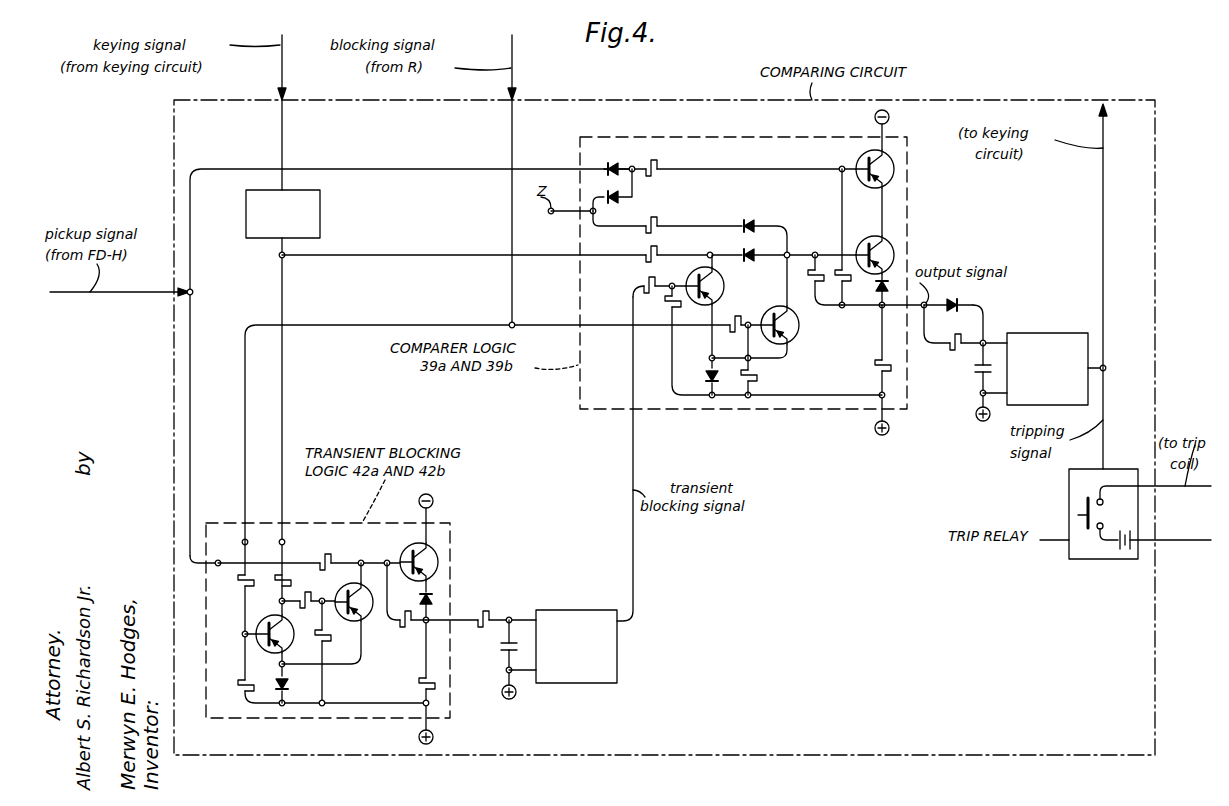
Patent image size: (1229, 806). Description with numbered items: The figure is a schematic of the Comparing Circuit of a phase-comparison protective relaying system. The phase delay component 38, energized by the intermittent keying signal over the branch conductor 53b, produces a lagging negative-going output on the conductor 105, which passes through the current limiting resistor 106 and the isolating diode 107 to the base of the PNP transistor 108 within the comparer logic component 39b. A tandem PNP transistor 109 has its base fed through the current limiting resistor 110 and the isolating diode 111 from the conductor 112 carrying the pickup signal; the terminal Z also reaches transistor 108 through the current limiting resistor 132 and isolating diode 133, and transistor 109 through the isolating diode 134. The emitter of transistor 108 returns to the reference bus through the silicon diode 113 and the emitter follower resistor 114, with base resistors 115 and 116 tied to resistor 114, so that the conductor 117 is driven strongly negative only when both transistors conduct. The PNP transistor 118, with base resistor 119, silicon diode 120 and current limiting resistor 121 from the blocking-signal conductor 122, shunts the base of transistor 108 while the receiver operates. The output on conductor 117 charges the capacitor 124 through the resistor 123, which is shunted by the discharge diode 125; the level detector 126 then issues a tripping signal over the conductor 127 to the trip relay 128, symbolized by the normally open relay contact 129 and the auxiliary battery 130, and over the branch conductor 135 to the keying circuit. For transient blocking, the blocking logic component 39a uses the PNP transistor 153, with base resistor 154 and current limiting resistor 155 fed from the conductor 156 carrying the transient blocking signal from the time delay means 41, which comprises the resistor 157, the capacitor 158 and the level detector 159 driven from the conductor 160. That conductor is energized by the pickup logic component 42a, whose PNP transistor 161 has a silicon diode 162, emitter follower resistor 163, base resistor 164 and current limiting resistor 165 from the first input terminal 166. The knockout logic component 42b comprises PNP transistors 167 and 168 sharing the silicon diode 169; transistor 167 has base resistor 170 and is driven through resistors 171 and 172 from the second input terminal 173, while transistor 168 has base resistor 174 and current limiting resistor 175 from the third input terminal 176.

The branch conductor 53b is at (283, 132).
The phase delay component 38 is at (320, 209).
The conductor 105 is at (280, 255).
The conductor 112 is at (192, 295).
The conductor 122 is at (511, 228).
The isolating diode 111 is at (612, 162).
The current limiting resistor 110 is at (652, 162).
The isolating diode 134 is at (616, 203).
The current limiting resistor 132 is at (654, 221).
The isolating diode 133 is at (748, 219).
The current limiting resistor 106 is at (654, 249).
The isolating diode 107 is at (748, 250).
The PNP transistor 109 is at (856, 155).
The PNP transistor 108 is at (866, 236).
The base resistor 116 is at (838, 268).
The base resistor 115 is at (812, 290).
The silicon diode 113 is at (876, 285).
The conductor 117 is at (900, 306).
The emitter follower resistor 114 is at (875, 378).
The current limiting resistor 155 is at (648, 278).
The conductor 156 is at (634, 570).
The PNP transistor 153 is at (717, 282).
The base resistor 154 is at (668, 310).
The current limiting resistor 121 is at (727, 322).
The PNP transistor 118 is at (793, 335).
The silicon diode 120 is at (705, 378).
The base resistor 119 is at (756, 375).
The diode 125 is at (958, 302).
The resistor 123 is at (952, 350).
The capacitor 124 is at (978, 372).
The level detector 126 is at (1058, 333).
The conductor 127 is at (1104, 394).
The conductor 135 is at (1104, 182).
The trip relay 128 is at (1069, 497).
The relay contact 129 is at (1104, 511).
The auxiliary battery 130 is at (1126, 560).
The pickup logic component 42a is at (328, 620).
The knockout logic component 42b is at (328, 620).
The blocking logic component 39a is at (743, 273).
The comparer logic component 39b is at (743, 273).
The third input terminal 176 is at (242, 540).
The second input terminal 173 is at (285, 541).
The first input terminal 166 is at (216, 568).
The current limiting resistor 165 is at (324, 556).
The PNP transistor 161 is at (414, 548).
The silicon diode 162 is at (420, 600).
The current limiting resistor 175 is at (238, 588).
The resistor 172 is at (290, 581).
The PNP transistor 168 is at (270, 651).
The resistor 171 is at (305, 612).
The PNP transistor 167 is at (368, 617).
The base resistor 170 is at (330, 635).
The base resistor 164 is at (404, 628).
The base resistor 174 is at (238, 690).
The silicon diode 169 is at (286, 684).
The emitter follower resistor 163 is at (419, 686).
The conductor 160 is at (470, 612).
The resistor 157 is at (482, 630).
The capacitor 158 is at (504, 650).
The time delay means 41 is at (535, 601).
The level detector 159 is at (570, 680).